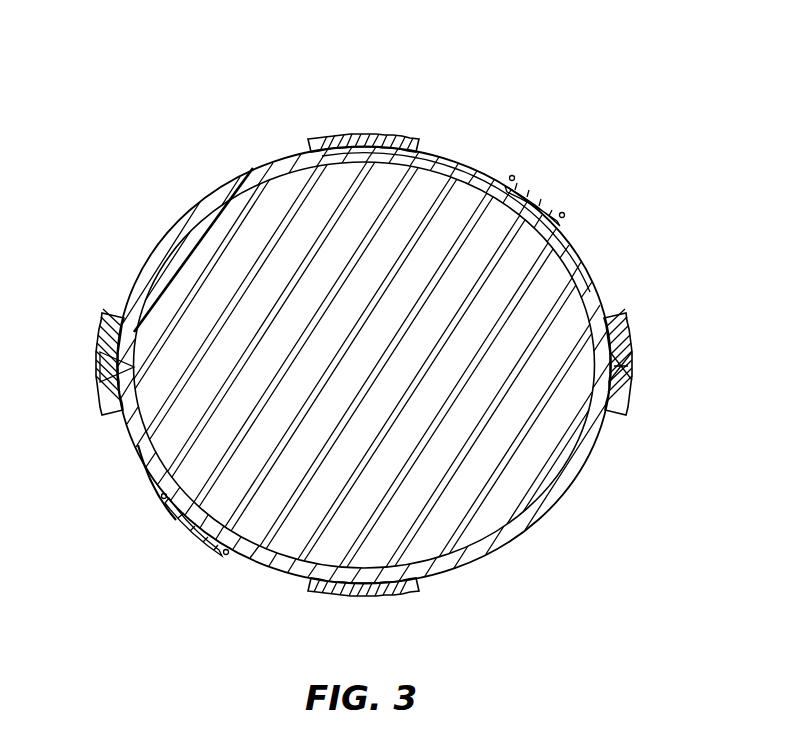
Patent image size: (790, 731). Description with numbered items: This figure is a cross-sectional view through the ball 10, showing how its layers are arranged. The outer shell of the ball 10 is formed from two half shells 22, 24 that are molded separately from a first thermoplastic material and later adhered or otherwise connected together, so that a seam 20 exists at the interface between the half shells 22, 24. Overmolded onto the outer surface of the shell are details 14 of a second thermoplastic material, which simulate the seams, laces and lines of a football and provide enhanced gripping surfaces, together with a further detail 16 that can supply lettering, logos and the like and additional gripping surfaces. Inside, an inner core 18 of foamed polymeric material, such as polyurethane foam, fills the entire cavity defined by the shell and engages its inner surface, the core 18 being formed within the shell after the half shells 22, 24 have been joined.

The ball 10 is at (545, 64).
The details 14 is at (365, 134).
The detail 16 is at (548, 203).
The inner core 18 is at (458, 158).
The seam 20 is at (626, 386).
The half shell 22 is at (211, 192).
The half shell 24 is at (577, 487).